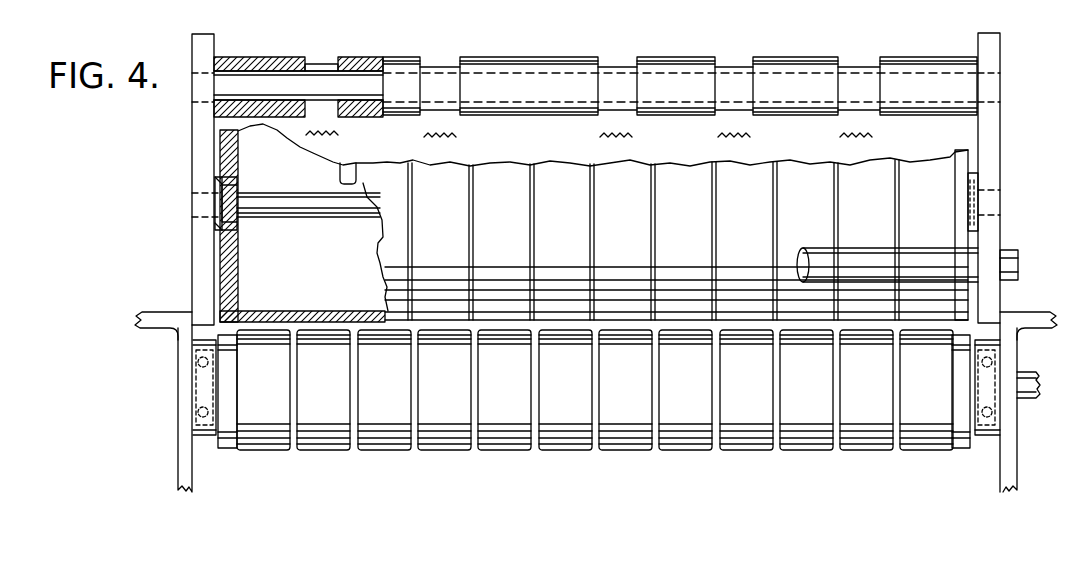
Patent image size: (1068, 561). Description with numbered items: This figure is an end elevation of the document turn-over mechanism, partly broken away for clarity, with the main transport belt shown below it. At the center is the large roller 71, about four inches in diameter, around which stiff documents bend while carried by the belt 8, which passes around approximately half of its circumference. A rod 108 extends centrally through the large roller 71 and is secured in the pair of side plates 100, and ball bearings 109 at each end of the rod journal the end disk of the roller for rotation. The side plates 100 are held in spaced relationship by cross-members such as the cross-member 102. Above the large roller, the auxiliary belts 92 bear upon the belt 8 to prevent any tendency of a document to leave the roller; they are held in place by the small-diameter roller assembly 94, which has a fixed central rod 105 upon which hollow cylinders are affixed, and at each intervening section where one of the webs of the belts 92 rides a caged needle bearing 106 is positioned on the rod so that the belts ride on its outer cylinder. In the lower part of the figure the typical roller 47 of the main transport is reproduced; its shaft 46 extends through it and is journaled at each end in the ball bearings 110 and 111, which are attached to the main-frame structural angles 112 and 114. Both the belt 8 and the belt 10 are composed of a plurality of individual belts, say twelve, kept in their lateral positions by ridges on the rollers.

The belt 8 is at (603, 222).
The belt 10 is at (595, 390).
The shaft 46 is at (1034, 397).
The roller 47 is at (228, 449).
The large roller 71 is at (298, 314).
The auxiliary belt 92 is at (589, 122).
The roller assembly 94 is at (263, 55).
The side plate 100 is at (198, 183).
The cross-member 102 is at (916, 264).
The fixed central rod 105 is at (357, 82).
The caged needle bearing 106 is at (324, 55).
The rod 108 is at (270, 213).
The ball bearing 109 is at (227, 199).
The ball bearing 110 is at (192, 350).
The ball bearing 111 is at (994, 350).
The main-frame structural angle 112 is at (153, 312).
The main-frame structural angle 114 is at (1027, 316).